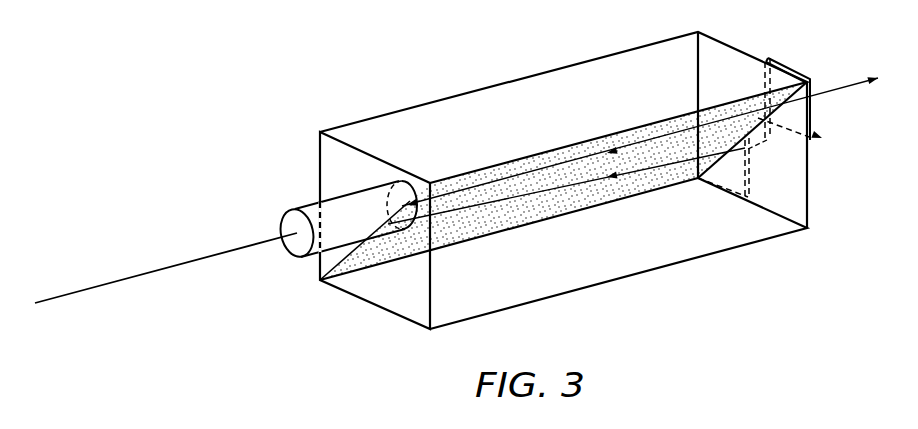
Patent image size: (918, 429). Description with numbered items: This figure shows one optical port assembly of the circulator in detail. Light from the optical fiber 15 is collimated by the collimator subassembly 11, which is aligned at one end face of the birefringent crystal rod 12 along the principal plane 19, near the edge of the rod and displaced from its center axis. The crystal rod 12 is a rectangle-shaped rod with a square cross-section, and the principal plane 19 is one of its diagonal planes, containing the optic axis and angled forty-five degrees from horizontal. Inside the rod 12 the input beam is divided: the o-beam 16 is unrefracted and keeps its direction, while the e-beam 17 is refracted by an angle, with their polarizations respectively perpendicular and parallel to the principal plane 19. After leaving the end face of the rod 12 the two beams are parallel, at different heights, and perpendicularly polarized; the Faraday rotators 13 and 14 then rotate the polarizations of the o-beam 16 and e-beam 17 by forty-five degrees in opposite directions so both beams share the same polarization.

The collimator subassembly 11 is at (287, 213).
The birefringent crystal rod 12 is at (592, 277).
The Faraday rotator 13 is at (808, 112).
The Faraday rotator 14 is at (750, 168).
The optical fiber 15 is at (108, 285).
The o-beam 16 is at (858, 82).
The e-beam 17 is at (522, 192).
The principal plane 19 is at (377, 260).